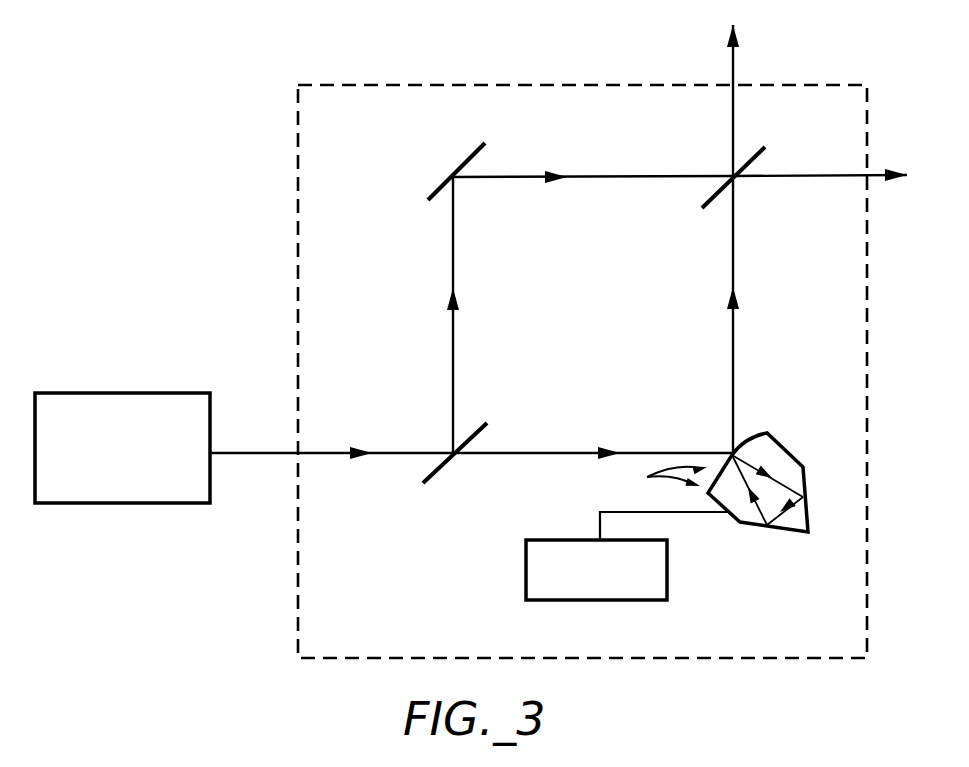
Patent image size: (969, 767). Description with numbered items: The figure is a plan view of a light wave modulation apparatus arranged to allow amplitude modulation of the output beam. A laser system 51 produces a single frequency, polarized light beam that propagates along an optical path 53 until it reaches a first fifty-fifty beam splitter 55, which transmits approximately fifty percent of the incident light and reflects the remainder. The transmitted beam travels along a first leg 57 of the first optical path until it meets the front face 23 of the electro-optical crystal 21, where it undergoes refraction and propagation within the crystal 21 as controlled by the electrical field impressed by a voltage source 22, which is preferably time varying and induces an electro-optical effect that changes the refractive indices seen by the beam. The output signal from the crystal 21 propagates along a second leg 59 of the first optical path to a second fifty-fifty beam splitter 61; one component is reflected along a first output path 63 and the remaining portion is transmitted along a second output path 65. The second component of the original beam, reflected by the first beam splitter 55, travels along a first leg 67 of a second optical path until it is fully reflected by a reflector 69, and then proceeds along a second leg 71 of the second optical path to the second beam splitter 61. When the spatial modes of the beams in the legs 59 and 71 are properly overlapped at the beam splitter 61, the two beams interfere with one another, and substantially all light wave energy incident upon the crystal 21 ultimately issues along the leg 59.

The electro-optical crystal 21 is at (770, 455).
The voltage source 22 is at (622, 597).
The front face 23 is at (654, 484).
The laser system 51 is at (98, 493).
The optical path 53 is at (220, 453).
The 50/50 beam splitter 55 is at (477, 435).
The first leg of the first optical path 57 is at (560, 457).
The second leg of the first optical path 59 is at (733, 328).
The second 50/50 beam splitter 61 is at (715, 195).
The first output path 63 is at (783, 175).
The second output path 65 is at (733, 108).
The first leg of the second optical path 67 is at (453, 327).
The reflector 69 is at (477, 163).
The second leg of the second optical path 71 is at (597, 167).